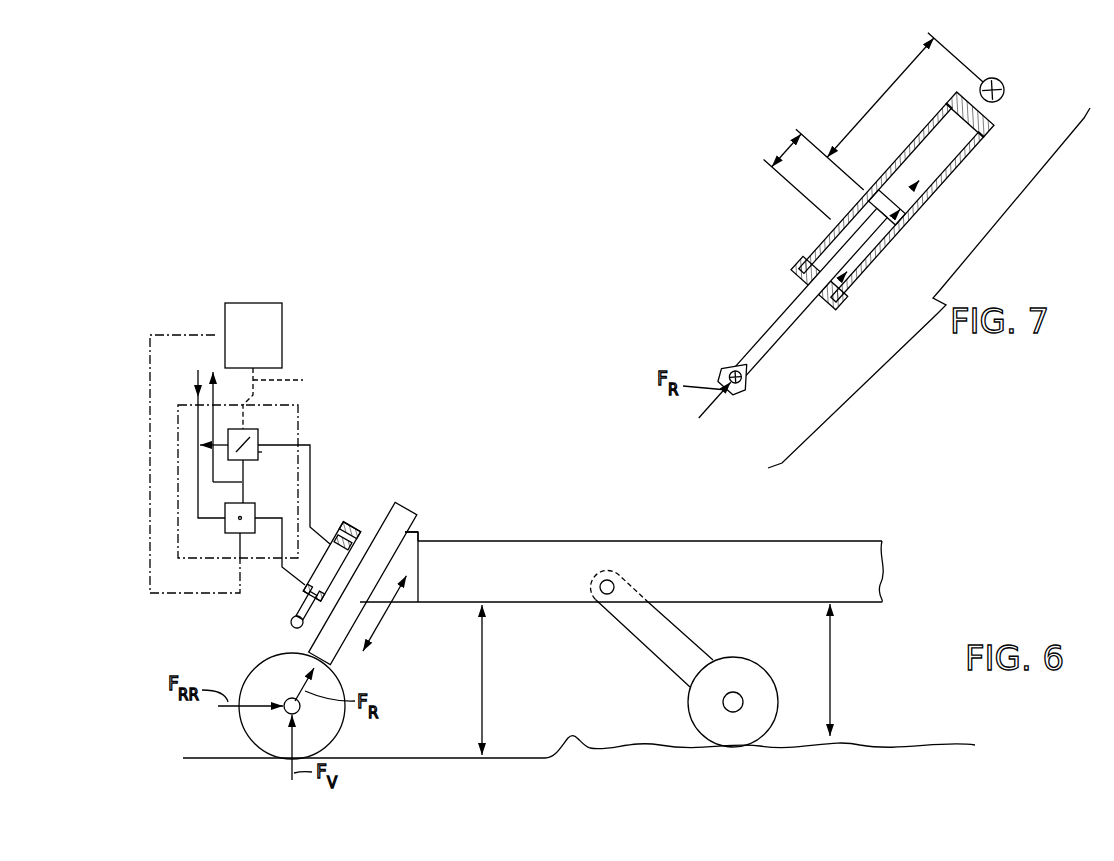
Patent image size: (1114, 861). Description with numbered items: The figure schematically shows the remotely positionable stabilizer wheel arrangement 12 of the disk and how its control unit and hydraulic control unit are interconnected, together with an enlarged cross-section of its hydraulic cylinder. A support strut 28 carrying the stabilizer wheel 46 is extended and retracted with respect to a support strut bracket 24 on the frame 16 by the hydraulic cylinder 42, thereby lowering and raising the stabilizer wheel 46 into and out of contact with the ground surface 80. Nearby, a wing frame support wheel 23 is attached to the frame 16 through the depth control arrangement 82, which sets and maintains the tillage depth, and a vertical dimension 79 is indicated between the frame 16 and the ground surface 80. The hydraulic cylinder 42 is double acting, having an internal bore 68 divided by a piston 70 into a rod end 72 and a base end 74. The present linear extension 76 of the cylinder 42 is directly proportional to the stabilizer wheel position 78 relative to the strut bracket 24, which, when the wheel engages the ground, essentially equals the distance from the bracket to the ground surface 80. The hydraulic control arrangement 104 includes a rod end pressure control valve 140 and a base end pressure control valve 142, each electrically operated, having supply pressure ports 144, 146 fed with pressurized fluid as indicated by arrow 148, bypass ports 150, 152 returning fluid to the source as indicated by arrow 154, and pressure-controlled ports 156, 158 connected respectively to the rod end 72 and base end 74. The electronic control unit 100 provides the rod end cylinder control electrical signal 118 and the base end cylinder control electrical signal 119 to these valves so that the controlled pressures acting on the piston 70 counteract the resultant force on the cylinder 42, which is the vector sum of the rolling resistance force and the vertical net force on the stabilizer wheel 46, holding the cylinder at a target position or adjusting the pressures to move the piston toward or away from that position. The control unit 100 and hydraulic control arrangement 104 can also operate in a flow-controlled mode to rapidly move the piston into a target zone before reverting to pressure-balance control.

The remotely positionable stabilizer wheel arrangement 12 is at (168, 643).
The frame 16 is at (825, 548).
The wing frame support wheel 23 is at (706, 714).
The support strut bracket 24 is at (412, 534).
The support strut 28 is at (405, 513).
The hydraulic cylinder 42 is at (293, 626).
The stabilizer wheel 46 is at (335, 732).
The internal bore 68 is at (348, 553).
The piston 70 is at (316, 552).
The rod end 72 is at (301, 594).
The base end 74 is at (357, 531).
The present linear extension 76 is at (388, 636).
The stabilizer wheel position 78 is at (485, 680).
The frame height 79 is at (834, 672).
The ground surface 80 is at (572, 742).
The depth control arrangement 82 is at (676, 634).
The electronic control unit 100 is at (257, 303).
The hydraulic control arrangement 104 is at (300, 412).
The rod end cylinder control electrical signal 118 is at (148, 355).
The base end cylinder control electrical signal 119 is at (293, 397).
The rod end pressure control valve 140 is at (236, 538).
The base end pressure control valve 142 is at (238, 437).
The supply pressure port 144 is at (222, 520).
The supply pressure port 146 is at (224, 447).
The arrow indicating supply of pressurized hydraulic fluid 148 is at (197, 398).
The bypass port 150 is at (242, 480).
The bypass port 152 is at (262, 460).
The arrow indicating return flow 154 is at (216, 398).
The pressure-controlled port 156 is at (283, 575).
The pressure-controlled port 158 is at (282, 444).